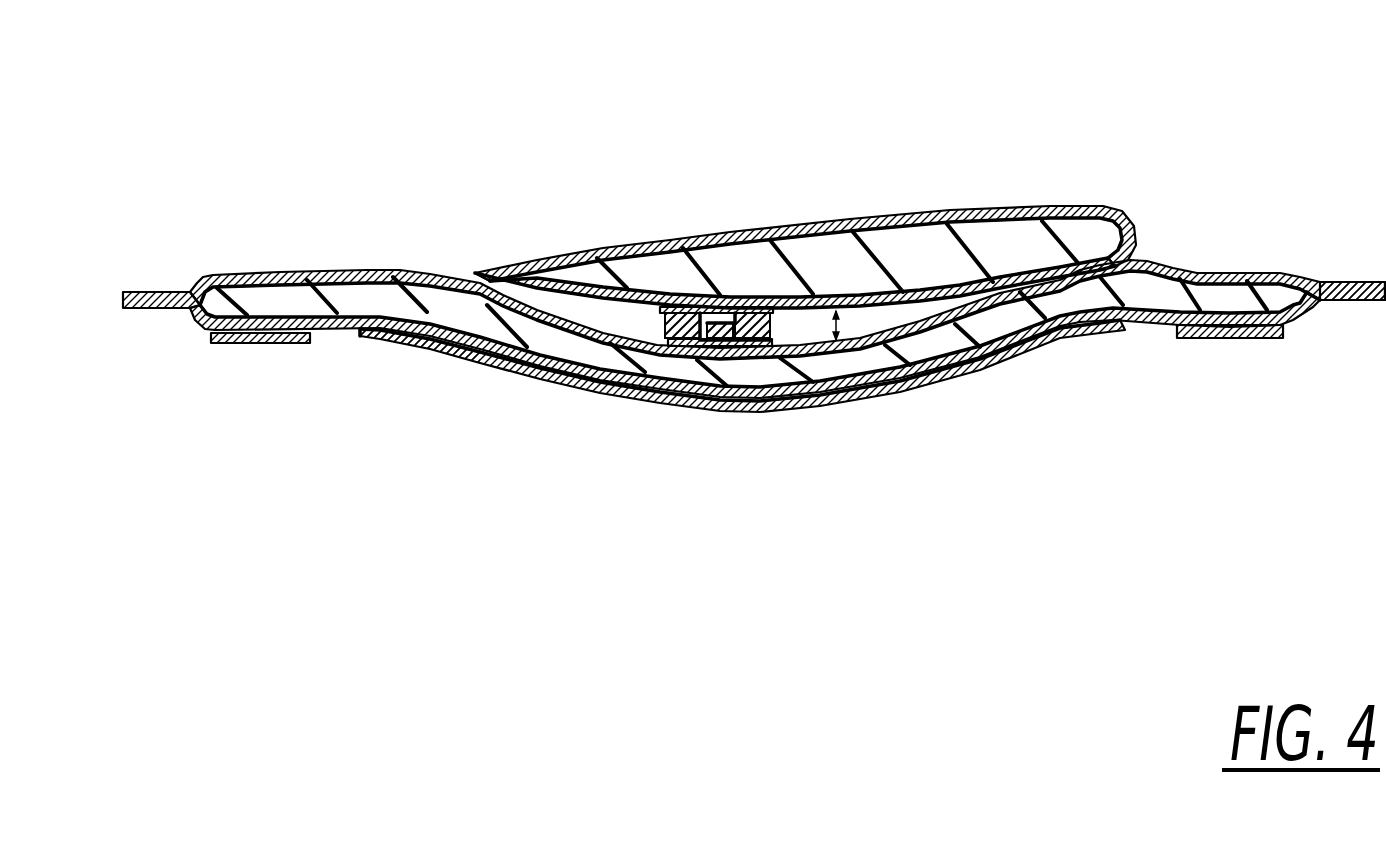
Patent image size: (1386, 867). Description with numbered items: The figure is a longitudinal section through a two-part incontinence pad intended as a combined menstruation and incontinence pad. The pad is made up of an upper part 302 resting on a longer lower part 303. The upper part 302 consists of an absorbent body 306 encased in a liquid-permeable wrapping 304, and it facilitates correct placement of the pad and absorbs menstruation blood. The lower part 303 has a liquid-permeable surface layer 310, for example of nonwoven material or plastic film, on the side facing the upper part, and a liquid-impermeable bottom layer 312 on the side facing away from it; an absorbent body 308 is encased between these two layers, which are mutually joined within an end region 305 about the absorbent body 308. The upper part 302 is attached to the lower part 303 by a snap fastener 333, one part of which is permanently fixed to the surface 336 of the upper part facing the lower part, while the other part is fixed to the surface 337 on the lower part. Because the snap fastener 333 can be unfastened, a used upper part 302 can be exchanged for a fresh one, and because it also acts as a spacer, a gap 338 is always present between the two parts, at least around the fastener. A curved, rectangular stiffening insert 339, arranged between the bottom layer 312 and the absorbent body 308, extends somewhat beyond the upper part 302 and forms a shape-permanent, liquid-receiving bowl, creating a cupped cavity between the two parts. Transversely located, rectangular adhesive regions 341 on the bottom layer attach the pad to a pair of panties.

The upper part 302 is at (1007, 243).
The lower part 303 is at (955, 360).
The liquid-permeable wrapping 304 is at (752, 232).
The end region 305 is at (1342, 280).
The absorbent body 306 is at (665, 247).
The absorbent body 308 is at (447, 343).
The liquid-permeable surface layer 310 is at (318, 268).
The liquid-impermeable bottom layer 312 is at (1133, 322).
The snap fastener 333 is at (710, 347).
The surface 336 is at (607, 312).
The surface 337 is at (881, 330).
The gap 338 is at (836, 312).
The stiffening insert 339 is at (1030, 356).
The adhesive regions 341 is at (258, 347).